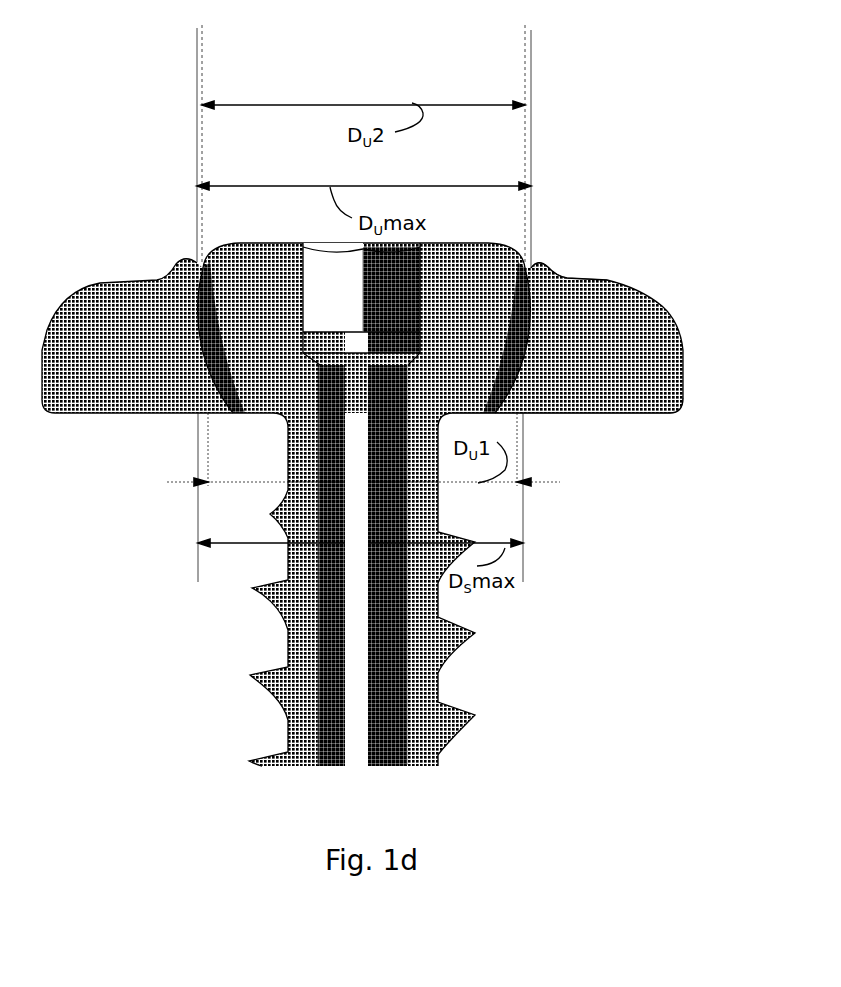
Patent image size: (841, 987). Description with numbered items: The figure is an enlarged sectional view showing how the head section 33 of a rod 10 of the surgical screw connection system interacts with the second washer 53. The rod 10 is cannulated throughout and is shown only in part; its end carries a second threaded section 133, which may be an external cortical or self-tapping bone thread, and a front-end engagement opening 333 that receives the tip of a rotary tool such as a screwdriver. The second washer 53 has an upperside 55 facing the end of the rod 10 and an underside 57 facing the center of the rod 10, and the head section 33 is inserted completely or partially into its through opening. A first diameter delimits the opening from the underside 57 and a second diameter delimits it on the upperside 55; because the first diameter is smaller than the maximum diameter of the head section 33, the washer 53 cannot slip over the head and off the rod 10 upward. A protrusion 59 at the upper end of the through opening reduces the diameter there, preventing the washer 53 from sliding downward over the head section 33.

The rod 10 is at (348, 559).
The head section 33 is at (453, 348).
The front-end engagement opening 333 is at (376, 310).
The second washer 53 is at (94, 369).
The upperside 55 is at (537, 262).
The underside 57 is at (597, 413).
The protrusion 59 is at (197, 262).
The second threaded section 133 is at (265, 676).